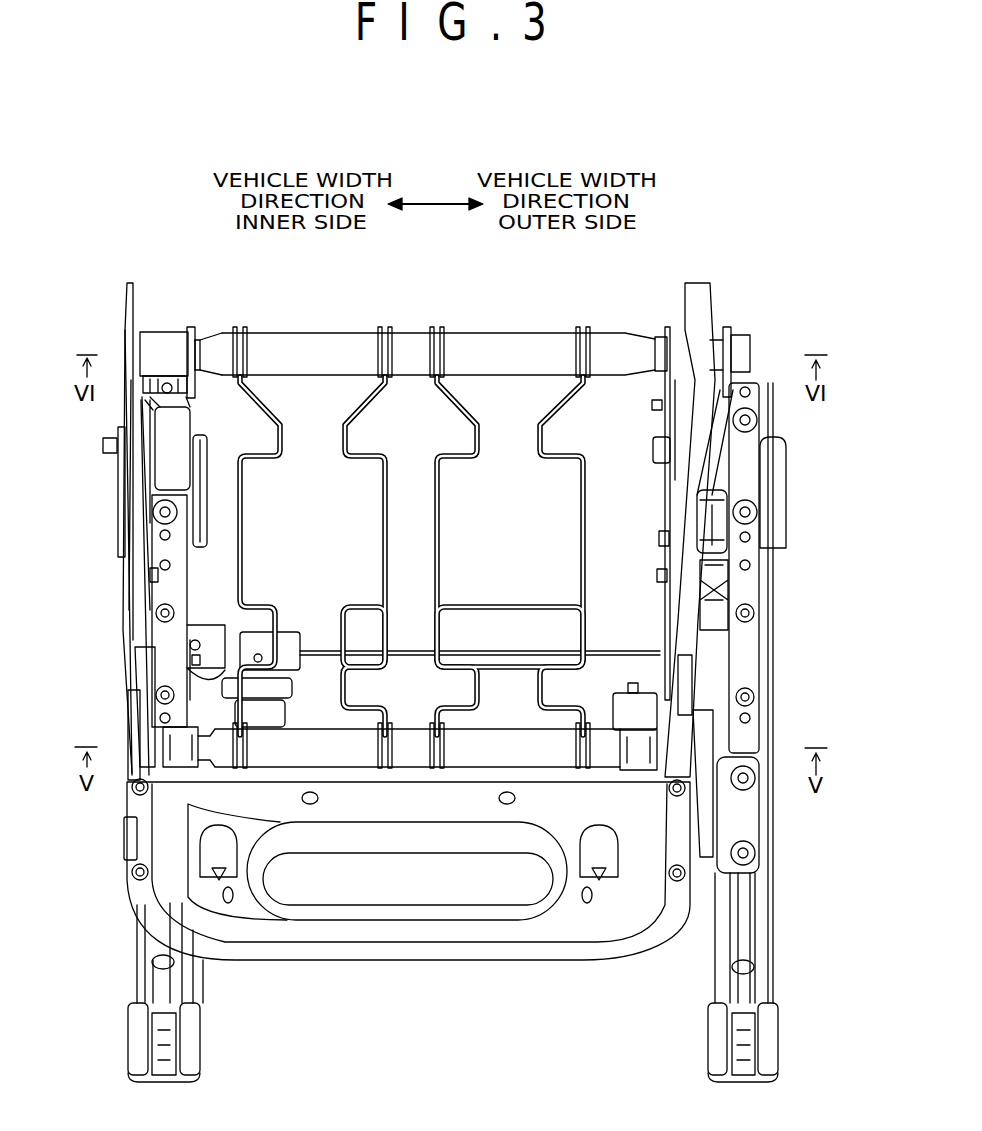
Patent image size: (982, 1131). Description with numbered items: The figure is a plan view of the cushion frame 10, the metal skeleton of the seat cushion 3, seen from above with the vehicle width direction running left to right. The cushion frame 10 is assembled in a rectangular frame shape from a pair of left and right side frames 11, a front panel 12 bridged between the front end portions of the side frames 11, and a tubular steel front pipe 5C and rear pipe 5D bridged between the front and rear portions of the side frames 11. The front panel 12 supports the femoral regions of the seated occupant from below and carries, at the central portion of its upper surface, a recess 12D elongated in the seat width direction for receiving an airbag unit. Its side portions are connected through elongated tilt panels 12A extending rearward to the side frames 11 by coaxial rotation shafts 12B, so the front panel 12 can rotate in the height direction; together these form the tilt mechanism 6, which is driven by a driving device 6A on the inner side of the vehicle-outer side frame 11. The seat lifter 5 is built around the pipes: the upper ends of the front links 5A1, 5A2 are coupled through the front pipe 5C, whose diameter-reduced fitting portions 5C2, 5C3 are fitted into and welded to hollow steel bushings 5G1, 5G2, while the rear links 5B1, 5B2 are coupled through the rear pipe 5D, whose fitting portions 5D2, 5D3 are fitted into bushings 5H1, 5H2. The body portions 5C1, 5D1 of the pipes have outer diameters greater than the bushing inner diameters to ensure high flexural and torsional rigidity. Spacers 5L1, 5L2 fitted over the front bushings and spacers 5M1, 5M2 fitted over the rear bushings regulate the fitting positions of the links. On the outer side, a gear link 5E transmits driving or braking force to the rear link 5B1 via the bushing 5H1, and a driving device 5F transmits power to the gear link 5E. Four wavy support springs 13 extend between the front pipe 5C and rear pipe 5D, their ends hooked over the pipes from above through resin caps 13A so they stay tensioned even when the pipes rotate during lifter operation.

The seat cushion 3 is at (674, 238).
The seat lifter 5 is at (762, 326).
The front link 5A1 is at (700, 765).
The front link 5A2 is at (132, 762).
The rear link 5B1 is at (745, 378).
The rear link 5B2 is at (173, 420).
The front pipe 5C is at (407, 755).
The body portion 5C1 is at (508, 735).
The fitting portion 5C2 is at (613, 745).
The fitting portion 5C3 is at (203, 753).
The rear pipe 5D is at (532, 342).
The body portion 5D1 is at (473, 355).
The fitting portion 5D2 is at (654, 350).
The fitting portion 5D3 is at (200, 357).
The gear link 5E is at (667, 385).
The driving device 5F is at (730, 552).
The bushing 5G1 is at (647, 693).
The bushing 5G2 is at (185, 737).
The bushing 5H1 is at (737, 343).
The bushing 5H2 is at (198, 328).
The spacer 5L1 is at (693, 740).
The spacer 5L2 is at (158, 735).
The spacer 5M1 is at (702, 340).
The spacer 5M2 is at (161, 350).
The tilt mechanism 6 is at (643, 955).
The driving device 6A is at (620, 710).
The cushion frame 10 is at (124, 574).
The side frame 11 is at (137, 477).
The front panel 12 is at (322, 922).
The tilt panel 12A is at (683, 683).
The rotation shaft 12B is at (157, 575).
The recess 12D is at (370, 880).
The support spring 13 is at (475, 443).
The resin cap 13A is at (247, 338).